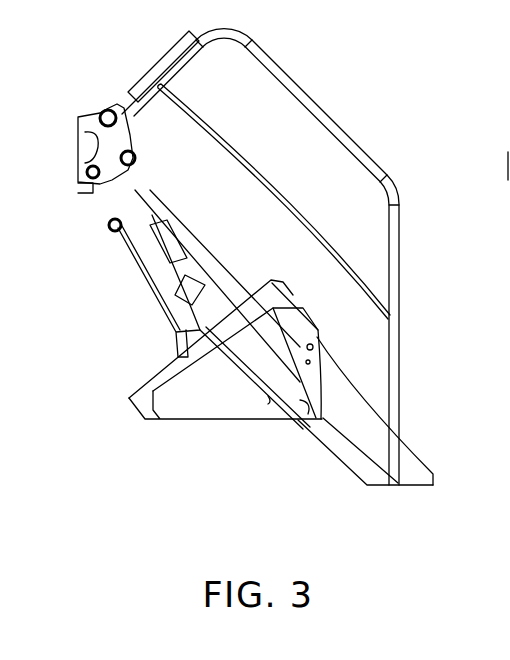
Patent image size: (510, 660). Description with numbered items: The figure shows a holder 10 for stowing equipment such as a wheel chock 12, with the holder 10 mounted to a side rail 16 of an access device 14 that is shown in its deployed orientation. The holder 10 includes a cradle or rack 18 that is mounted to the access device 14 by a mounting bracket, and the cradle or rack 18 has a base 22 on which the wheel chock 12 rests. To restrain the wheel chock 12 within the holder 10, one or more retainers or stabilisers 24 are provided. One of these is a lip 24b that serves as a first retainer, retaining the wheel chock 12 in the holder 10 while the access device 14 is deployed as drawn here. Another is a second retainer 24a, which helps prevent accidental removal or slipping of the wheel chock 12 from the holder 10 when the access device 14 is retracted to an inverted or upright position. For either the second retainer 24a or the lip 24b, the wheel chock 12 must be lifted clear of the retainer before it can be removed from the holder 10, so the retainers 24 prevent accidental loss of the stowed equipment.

The holder 10 is at (203, 421).
The wheel chock 12 is at (308, 337).
The access device 14 is at (133, 177).
The side rail 16 is at (212, 312).
The cradle or rack 18 is at (167, 421).
The base 22 is at (264, 421).
The retainer 24 is at (292, 287).
The second retainer 24a is at (275, 283).
The lip 24b is at (333, 418).